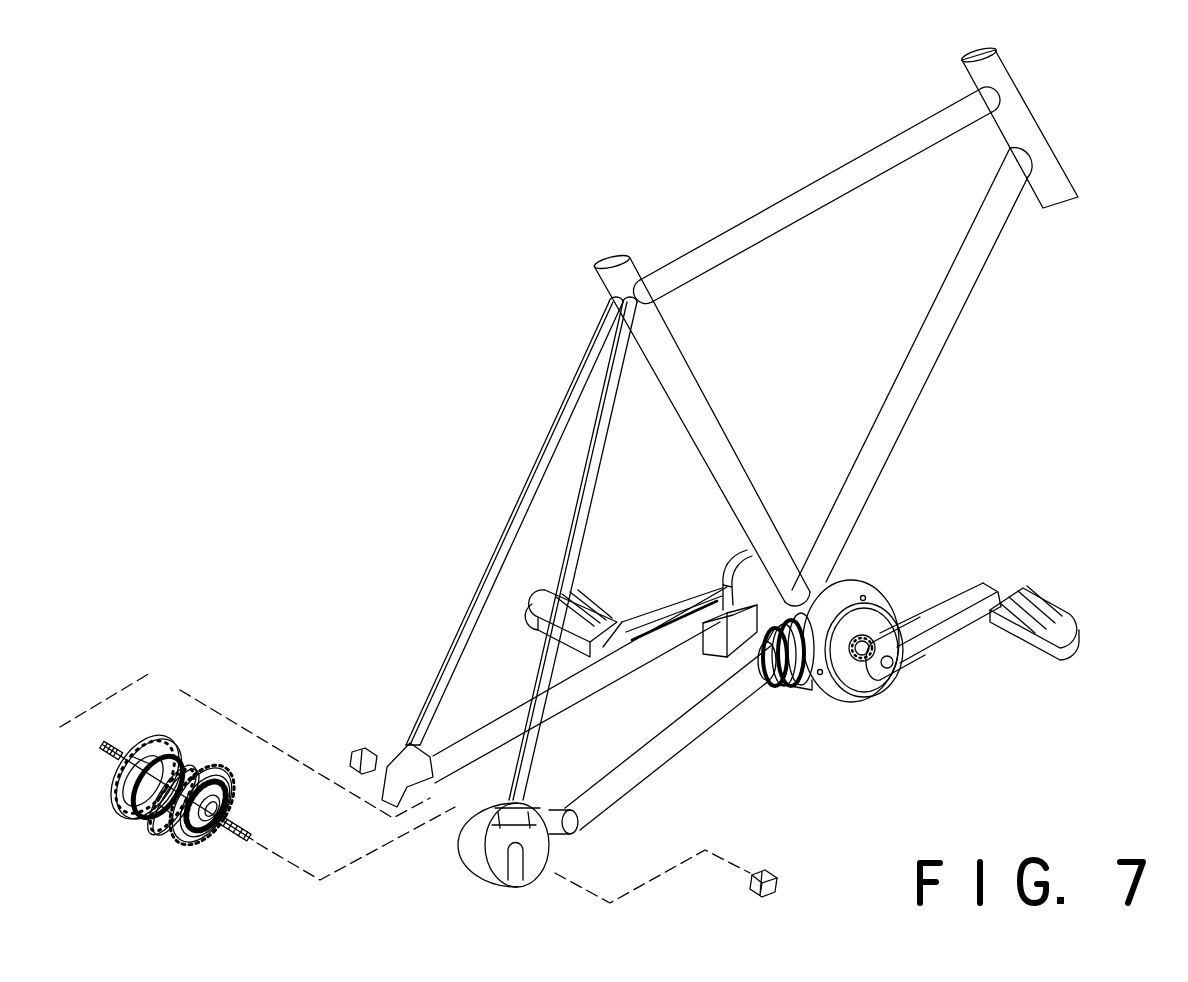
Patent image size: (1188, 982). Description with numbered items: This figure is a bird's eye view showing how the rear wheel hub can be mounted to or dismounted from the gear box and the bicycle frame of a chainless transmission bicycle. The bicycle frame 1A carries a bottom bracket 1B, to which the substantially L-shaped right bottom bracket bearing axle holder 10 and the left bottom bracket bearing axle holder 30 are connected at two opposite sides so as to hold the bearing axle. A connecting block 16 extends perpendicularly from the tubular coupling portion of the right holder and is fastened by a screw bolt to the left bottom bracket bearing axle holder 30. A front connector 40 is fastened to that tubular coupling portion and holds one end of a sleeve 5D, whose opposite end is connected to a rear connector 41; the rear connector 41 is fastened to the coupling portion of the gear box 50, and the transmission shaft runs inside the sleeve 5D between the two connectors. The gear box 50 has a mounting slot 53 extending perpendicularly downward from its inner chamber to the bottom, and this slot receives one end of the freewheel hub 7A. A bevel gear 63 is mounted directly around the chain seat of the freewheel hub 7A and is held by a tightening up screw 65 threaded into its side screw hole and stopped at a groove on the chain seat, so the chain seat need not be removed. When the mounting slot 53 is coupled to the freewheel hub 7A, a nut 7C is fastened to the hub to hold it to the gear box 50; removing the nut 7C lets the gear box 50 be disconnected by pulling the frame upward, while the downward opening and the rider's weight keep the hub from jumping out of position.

The bicycle frame 1A is at (898, 422).
The bottom bracket 1B is at (752, 585).
The right bottom bracket bearing axle holder 10 is at (865, 590).
The connecting block 16 is at (718, 620).
The left bottom bracket bearing axle holder 30 is at (747, 550).
The front connector 40 is at (794, 686).
The rear connector 41 is at (578, 832).
The gear box 50 is at (457, 852).
The mounting slot 53 is at (515, 882).
The sleeve 5D is at (657, 767).
The bevel gear 63 is at (165, 840).
The tightening up screw 65 is at (200, 760).
The freewheel hub 7A is at (120, 807).
The nut 7C is at (777, 885).